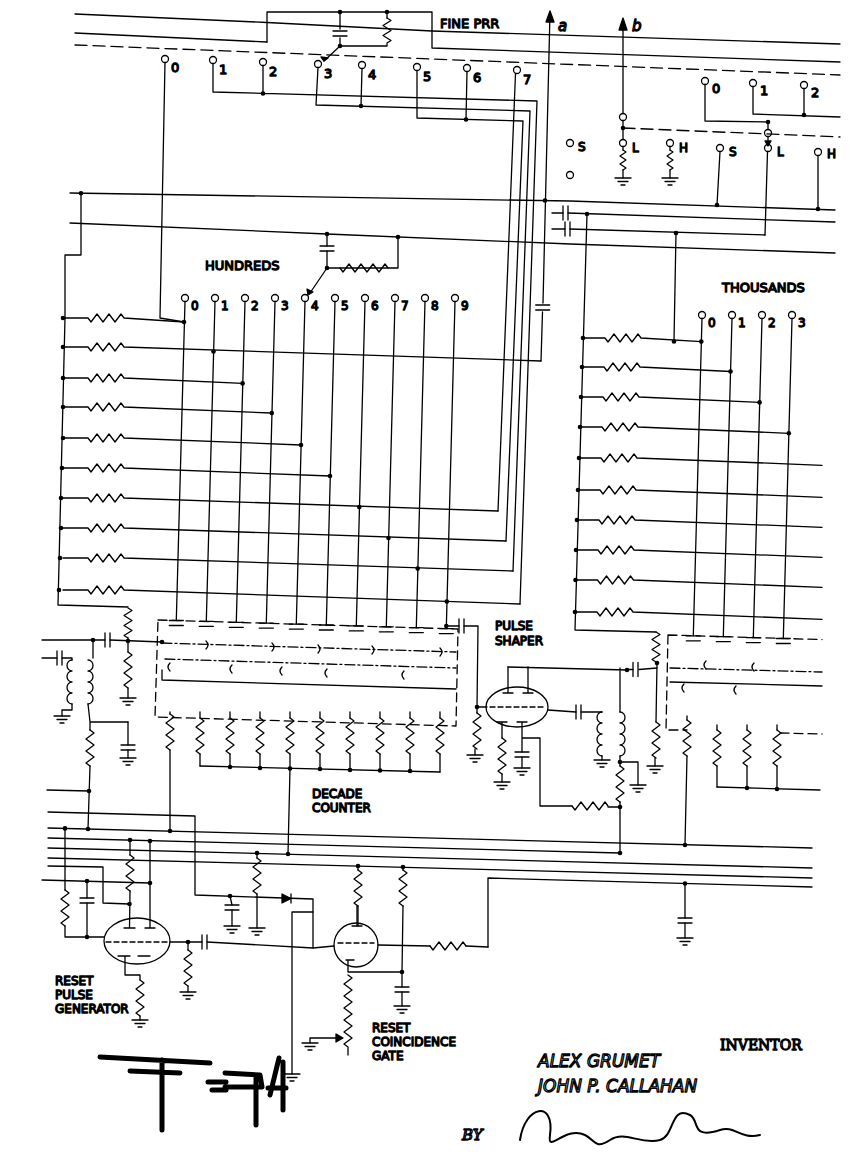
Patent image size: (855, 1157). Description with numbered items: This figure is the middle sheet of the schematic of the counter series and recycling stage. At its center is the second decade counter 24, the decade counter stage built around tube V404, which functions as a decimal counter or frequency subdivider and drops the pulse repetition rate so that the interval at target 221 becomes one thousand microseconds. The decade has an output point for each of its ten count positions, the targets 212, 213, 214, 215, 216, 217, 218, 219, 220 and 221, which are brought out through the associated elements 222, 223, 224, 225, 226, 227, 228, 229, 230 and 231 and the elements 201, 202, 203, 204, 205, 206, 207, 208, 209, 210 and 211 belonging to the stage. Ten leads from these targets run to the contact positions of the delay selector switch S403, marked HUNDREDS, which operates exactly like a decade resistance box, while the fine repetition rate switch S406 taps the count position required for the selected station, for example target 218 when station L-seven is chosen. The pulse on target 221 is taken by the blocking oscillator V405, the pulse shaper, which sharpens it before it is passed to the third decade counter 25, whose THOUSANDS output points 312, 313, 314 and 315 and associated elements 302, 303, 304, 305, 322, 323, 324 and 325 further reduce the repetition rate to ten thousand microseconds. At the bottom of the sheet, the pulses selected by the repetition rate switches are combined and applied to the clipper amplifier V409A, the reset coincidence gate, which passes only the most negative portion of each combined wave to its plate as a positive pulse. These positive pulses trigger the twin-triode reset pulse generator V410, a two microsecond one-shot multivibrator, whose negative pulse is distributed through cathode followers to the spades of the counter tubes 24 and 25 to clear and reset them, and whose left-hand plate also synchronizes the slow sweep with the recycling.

The second decade counter 24 is at (158, 635).
The third decade counter 25 is at (655, 650).
The grid resistor 201 is at (140, 670).
The resistor 202 is at (157, 771).
The resistor 203 is at (190, 733).
The resistor 204 is at (220, 733).
The resistor 205 is at (250, 734).
The resistor 206 is at (280, 734).
The resistor 207 is at (310, 735).
The resistor 208 is at (340, 735).
The resistor 209 is at (370, 735).
The resistor 210 is at (400, 736).
The resistor 211 is at (430, 736).
The capacitor 212 is at (167, 614).
The capacitor 213 is at (197, 614).
The capacitor 214 is at (227, 615).
The capacitor 215 is at (257, 616).
The capacitor 216 is at (287, 617).
The capacitor 217 is at (317, 618).
The target 218 is at (347, 619).
The capacitor 219 is at (377, 620).
The capacitor 220 is at (407, 621).
The target 221 is at (437, 622).
The diode 222 is at (182, 669).
The diode 223 is at (193, 644).
The diode 224 is at (243, 671).
The diode 225 is at (259, 646).
The diode 226 is at (293, 673).
The diode 227 is at (306, 648).
The diode 228 is at (338, 675).
The diode 229 is at (359, 650).
The diode 230 is at (388, 677).
The diode 231 is at (427, 653).
The resistor 302 is at (692, 774).
The resistor 303 is at (708, 752).
The resistor 304 is at (738, 752).
The resistor 305 is at (768, 753).
The capacitor 312 is at (684, 629).
The capacitor 313 is at (714, 630).
The capacitor 314 is at (744, 631).
The capacitor 315 is at (774, 632).
The diode 322 is at (696, 688).
The diode 323 is at (716, 662).
The diode 324 is at (747, 690).
The diode 325 is at (764, 664).
The delay selector switch S403 is at (352, 264).
The fine repetition rate switch S406 is at (339, 35).
The decade counter tube V404 is at (238, 778).
The blocking oscillator V405 is at (553, 738).
The reset coincidence gate V409A is at (395, 980).
The reset pulse generator V410 is at (164, 938).